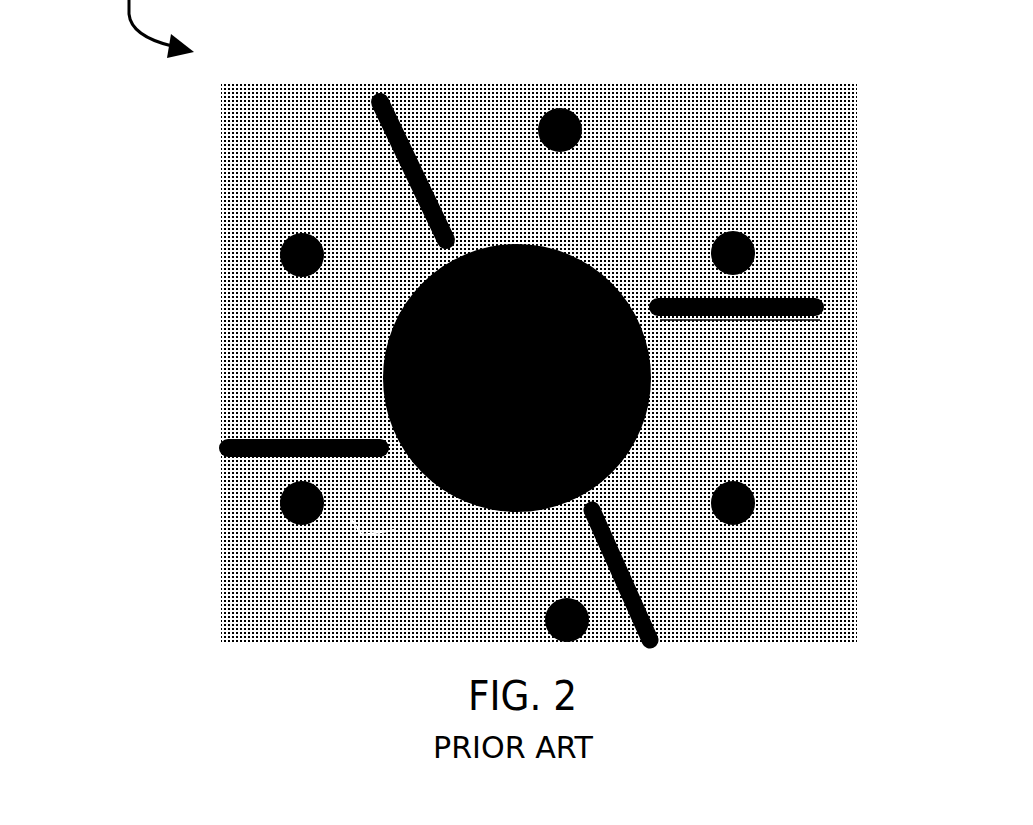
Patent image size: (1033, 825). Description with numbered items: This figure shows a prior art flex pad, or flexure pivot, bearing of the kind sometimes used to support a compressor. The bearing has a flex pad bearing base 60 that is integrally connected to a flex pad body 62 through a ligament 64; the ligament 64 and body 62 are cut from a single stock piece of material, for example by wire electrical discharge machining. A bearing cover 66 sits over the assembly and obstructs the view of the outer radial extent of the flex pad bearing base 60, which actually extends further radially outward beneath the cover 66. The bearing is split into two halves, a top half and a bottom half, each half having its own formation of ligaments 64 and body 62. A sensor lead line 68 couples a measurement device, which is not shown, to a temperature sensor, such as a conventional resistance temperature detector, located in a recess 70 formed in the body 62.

The flex pad bearing base 60 is at (327, 368).
The flex pad body 62 is at (441, 522).
The ligament 64 is at (383, 521).
The bearing cover 66 is at (272, 305).
The sensor lead line 68 is at (767, 317).
The recess 70 is at (656, 297).